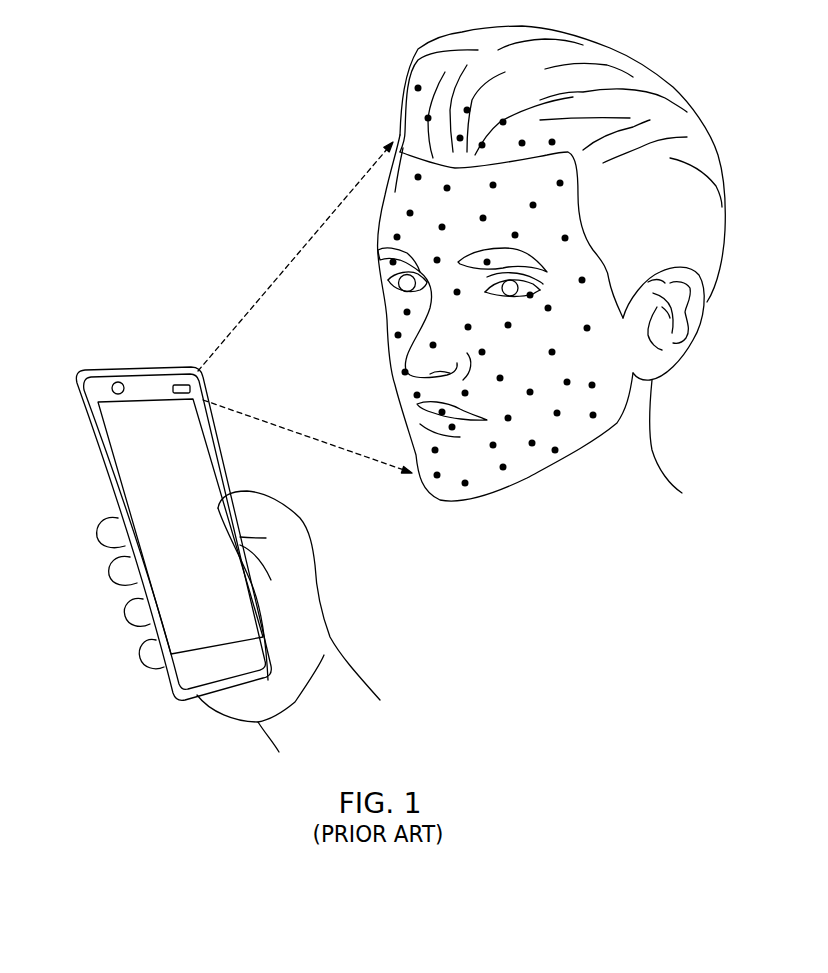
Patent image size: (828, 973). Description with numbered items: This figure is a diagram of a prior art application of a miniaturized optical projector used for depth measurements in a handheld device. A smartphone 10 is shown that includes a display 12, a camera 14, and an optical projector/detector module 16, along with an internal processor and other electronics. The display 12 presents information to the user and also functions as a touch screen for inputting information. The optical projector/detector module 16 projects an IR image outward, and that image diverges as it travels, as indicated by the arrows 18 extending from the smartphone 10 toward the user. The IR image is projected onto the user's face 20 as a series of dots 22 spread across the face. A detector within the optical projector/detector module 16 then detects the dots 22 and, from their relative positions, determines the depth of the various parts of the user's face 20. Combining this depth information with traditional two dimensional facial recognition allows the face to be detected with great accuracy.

The smartphone 10 is at (101, 458).
The display 12 is at (193, 467).
The camera 14 is at (119, 381).
The optical projector/detector module 16 is at (183, 384).
The arrows 18 is at (290, 257).
The user's face 20 is at (577, 452).
The dots 22 is at (567, 239).